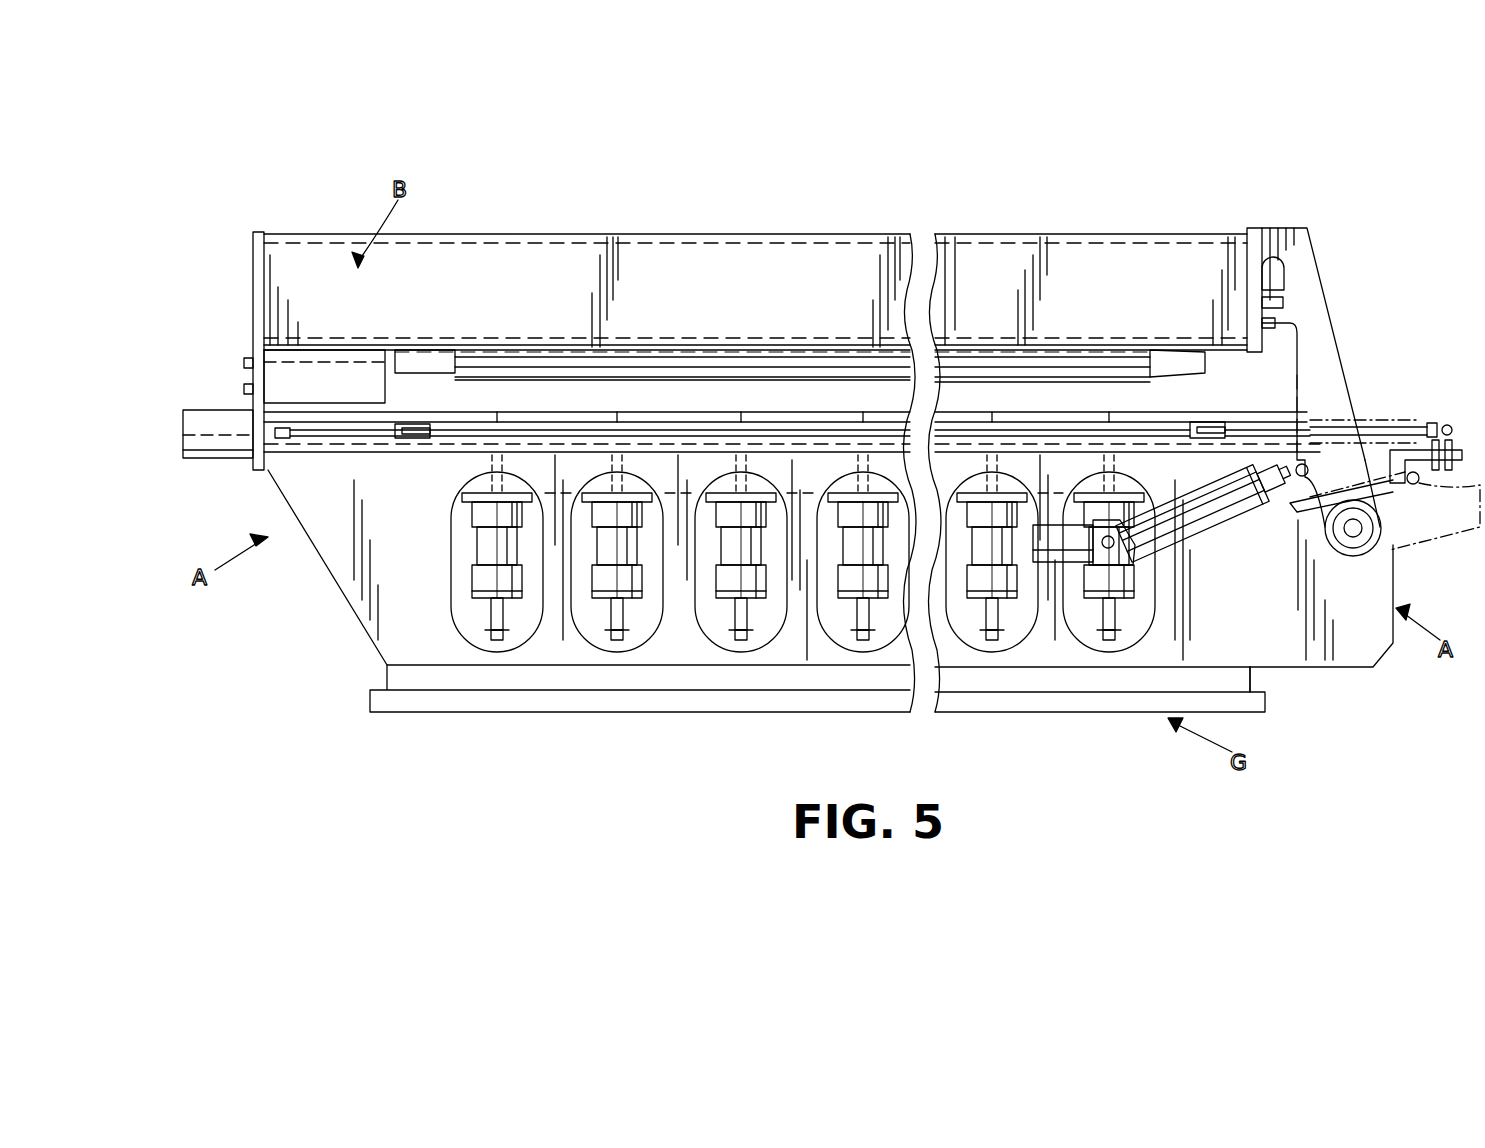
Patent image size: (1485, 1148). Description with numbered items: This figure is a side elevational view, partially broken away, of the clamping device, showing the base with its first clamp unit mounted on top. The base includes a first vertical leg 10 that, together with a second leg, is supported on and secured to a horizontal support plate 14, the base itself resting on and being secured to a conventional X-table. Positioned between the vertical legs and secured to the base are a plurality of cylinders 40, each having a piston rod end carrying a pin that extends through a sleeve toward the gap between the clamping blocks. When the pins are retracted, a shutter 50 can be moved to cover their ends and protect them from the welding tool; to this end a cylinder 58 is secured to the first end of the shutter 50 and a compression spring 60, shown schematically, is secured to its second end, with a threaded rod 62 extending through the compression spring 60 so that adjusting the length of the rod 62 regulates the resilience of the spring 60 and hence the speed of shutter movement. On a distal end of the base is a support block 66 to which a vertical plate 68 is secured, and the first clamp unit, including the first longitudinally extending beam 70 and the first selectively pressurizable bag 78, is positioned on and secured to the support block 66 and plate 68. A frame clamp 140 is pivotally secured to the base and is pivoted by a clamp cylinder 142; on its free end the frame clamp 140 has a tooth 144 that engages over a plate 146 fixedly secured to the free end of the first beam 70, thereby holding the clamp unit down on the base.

The first vertical leg 10 is at (355, 580).
The horizontal support plate 14 is at (1232, 678).
The cylinders 40 is at (490, 548).
The shutter 50 is at (640, 436).
The cylinder 58 is at (222, 445).
The compression spring 60 is at (1375, 427).
The threaded rod 62 is at (1432, 423).
The support block 66 is at (285, 380).
The vertical plate 68 is at (253, 277).
The first longitudinally extending beam 70 is at (640, 262).
The first selectively pressurizable bag 78 is at (427, 362).
The frame clamp 140 is at (1320, 360).
The clamp cylinder 142 is at (1195, 540).
The tooth 144 is at (1290, 245).
The plate 146 is at (1268, 298).